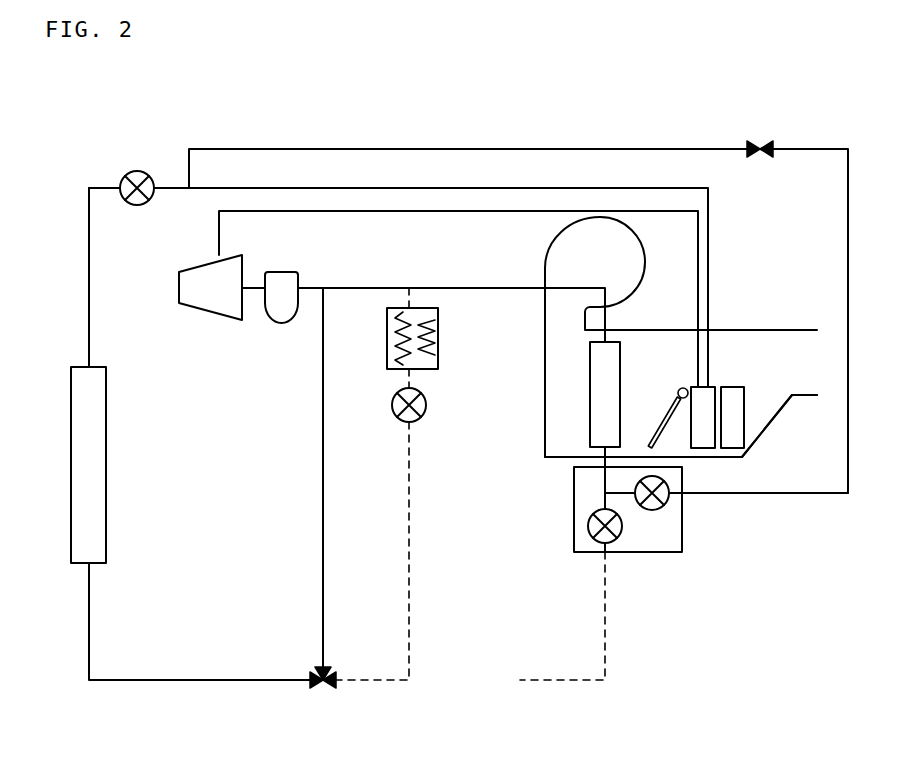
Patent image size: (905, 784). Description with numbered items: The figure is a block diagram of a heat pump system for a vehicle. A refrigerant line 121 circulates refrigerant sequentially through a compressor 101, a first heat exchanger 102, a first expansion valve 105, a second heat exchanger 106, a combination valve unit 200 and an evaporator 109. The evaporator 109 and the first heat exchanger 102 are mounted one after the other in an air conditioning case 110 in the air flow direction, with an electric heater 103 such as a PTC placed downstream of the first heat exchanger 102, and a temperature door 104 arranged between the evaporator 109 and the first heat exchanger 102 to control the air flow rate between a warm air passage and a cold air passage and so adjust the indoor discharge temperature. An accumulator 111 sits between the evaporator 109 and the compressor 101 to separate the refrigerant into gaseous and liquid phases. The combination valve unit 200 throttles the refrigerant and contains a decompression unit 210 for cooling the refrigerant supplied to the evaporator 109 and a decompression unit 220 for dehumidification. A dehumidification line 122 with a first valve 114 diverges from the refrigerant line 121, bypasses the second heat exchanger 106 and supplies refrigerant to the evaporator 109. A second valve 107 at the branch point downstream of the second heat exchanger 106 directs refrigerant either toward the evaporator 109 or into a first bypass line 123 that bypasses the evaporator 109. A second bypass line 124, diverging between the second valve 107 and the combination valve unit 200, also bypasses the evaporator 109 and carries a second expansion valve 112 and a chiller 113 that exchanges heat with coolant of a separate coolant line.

The compressor 101 is at (211, 316).
The first heat exchanger 102 is at (708, 387).
The electric heater 103 is at (733, 387).
The temperature door 104 is at (664, 417).
The first expansion valve 105 is at (137, 171).
The second heat exchanger 106 is at (106, 465).
The second valve 107 is at (323, 690).
The evaporator 109 is at (590, 395).
The air conditioning case 110 is at (774, 432).
The accumulator 111 is at (282, 325).
The second expansion valve 112 is at (425, 417).
The chiller 113 is at (438, 338).
The first valve 114 is at (760, 141).
The refrigerant line 121 is at (450, 212).
The dehumidification line 122 is at (470, 148).
The first bypass line 123 is at (323, 503).
The second bypass line 124 is at (409, 585).
The combination valve unit 200 is at (662, 562).
The decompression unit for cooling 210 is at (588, 527).
The decompression unit for dehumidification 220 is at (655, 508).